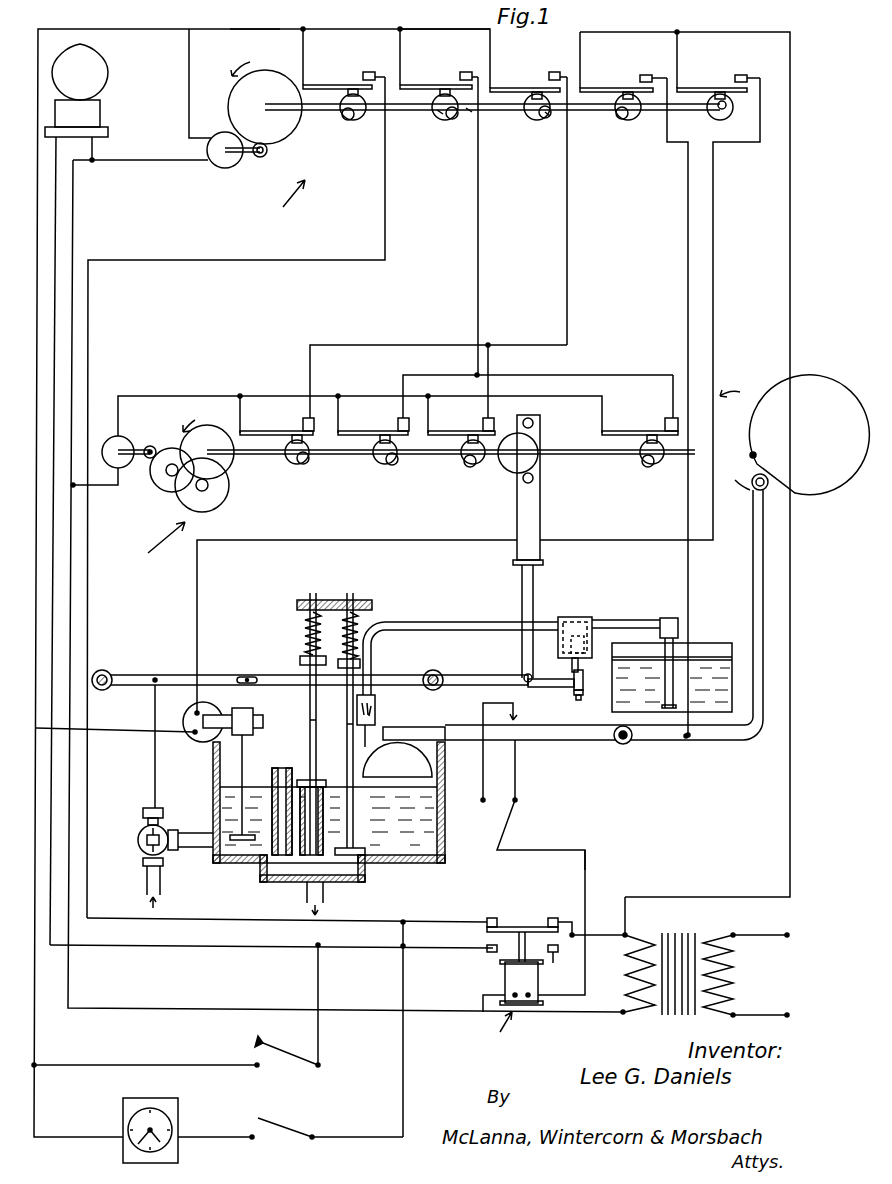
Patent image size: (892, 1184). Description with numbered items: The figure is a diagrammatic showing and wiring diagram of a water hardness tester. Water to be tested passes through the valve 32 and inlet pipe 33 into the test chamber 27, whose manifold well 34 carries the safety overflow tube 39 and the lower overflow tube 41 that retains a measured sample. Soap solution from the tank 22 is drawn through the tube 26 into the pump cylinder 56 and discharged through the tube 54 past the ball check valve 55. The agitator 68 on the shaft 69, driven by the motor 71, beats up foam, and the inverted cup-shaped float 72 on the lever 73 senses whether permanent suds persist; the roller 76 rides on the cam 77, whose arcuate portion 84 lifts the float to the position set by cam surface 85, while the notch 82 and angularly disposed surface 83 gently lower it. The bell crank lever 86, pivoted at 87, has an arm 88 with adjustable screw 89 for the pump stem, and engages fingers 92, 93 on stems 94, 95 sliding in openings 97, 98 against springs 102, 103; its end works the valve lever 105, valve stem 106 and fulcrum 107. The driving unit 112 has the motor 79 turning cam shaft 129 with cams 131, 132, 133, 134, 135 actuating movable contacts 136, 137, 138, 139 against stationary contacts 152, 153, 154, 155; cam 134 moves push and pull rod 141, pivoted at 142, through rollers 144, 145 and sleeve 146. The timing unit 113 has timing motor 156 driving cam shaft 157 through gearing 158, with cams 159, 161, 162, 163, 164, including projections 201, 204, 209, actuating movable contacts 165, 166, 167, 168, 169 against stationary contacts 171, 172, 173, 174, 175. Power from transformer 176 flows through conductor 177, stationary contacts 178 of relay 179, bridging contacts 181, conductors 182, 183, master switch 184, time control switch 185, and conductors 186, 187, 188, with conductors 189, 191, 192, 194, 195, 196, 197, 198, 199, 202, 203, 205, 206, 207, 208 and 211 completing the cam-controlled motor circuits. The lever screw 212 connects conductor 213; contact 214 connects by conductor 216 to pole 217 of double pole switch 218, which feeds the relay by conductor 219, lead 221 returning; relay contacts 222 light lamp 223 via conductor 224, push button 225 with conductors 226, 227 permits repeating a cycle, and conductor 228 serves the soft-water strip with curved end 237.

The tank 22 is at (713, 746).
The tube 26 is at (674, 650).
The test chamber 27 is at (329, 802).
The valve 32 is at (140, 838).
The inlet pipe 33 is at (155, 880).
The manifold well 34 is at (343, 875).
The safety overflow tube 39 is at (285, 767).
The overflow tube 41 is at (295, 862).
The tube 54 is at (390, 620).
The ball check valve 55 is at (377, 712).
The pump cylinder 56 is at (585, 615).
The agitator 68 is at (240, 842).
The shaft 69 is at (244, 752).
The electric motor 71 is at (212, 707).
The inverted cup-shaped float 72 is at (397, 760).
The lever 73 is at (737, 742).
The roller 76 is at (764, 490).
The cam 77 is at (802, 435).
The motor 79 is at (104, 432).
The notch 82 is at (758, 460).
The angularly disposed surface 83 is at (778, 486).
The arcuate portion 84 is at (737, 478).
The cam surface 85 is at (755, 396).
The lever 86 is at (270, 673).
The pivotal support 87 is at (442, 673).
The arm 88 is at (544, 678).
The adjustable screw 89 is at (577, 700).
The adjustable finger 92 is at (295, 655).
The adjustable finger 93 is at (342, 660).
The stem 94 is at (308, 720).
The stem 95 is at (346, 724).
The opening 97 is at (308, 592).
The opening 98 is at (356, 592).
The spring 102 is at (300, 625).
The spring 103 is at (340, 599).
The valve lever 105 is at (208, 675).
The valve stem 106 is at (153, 715).
The fulcrum 107 is at (104, 670).
The driving unit 112 is at (172, 497).
The timing unit 113 is at (270, 205).
The cam shaft 129 is at (342, 458).
The cam 131 is at (290, 464).
The cam 132 is at (392, 466).
The cam 133 is at (470, 466).
The cam 134 is at (512, 468).
The cam 135 is at (658, 465).
The movable contact 136 is at (300, 429).
The movable contact 137 is at (396, 429).
The movable contact 138 is at (481, 429).
The movable contact 139 is at (664, 429).
The push and pull rod 141 is at (535, 590).
The pivotal attachment 142 is at (522, 672).
The roller 144 is at (535, 421).
The roller 145 is at (534, 482).
The sleeve 146 is at (542, 518).
The stationary contact 152 is at (312, 416).
The stationary contact 153 is at (408, 418).
The stationary contact 154 is at (494, 419).
The stationary contact 155 is at (665, 418).
The timing motor 156 is at (235, 163).
The cam shaft 157 is at (405, 118).
The gearing 158 is at (268, 155).
The cam 159 is at (350, 120).
The cam 161 is at (447, 120).
The cam 162 is at (531, 118).
The cam 163 is at (622, 120).
The cam 164 is at (713, 118).
The movable contact 165 is at (352, 70).
The movable contact 166 is at (445, 75).
The movable contact 167 is at (525, 86).
The movable contact 168 is at (620, 86).
The movable contact 169 is at (715, 86).
The stationary contact 171 is at (368, 72).
The stationary contact 172 is at (466, 72).
The stationary contact 173 is at (555, 72).
The stationary contact 174 is at (647, 75).
The stationary contact 175 is at (744, 75).
The transformer 176 is at (678, 1010).
The conductor 177 is at (598, 932).
The stationary contacts 178 is at (556, 915).
The relay 179 is at (493, 1032).
The bridging contacts 181 is at (515, 926).
The conductor 182 is at (424, 918).
The conductor 183 is at (405, 1057).
The master switch 184 is at (286, 1125).
The time control switch 185 is at (187, 1109).
The conductor 186 is at (36, 1100).
The conductor 187 is at (189, 78).
The conductor 188 is at (73, 220).
The conductor 189 is at (190, 265).
The conductor 191 is at (304, 45).
The conductor 192 is at (255, 29).
The conductor 194 is at (383, 29).
The conductor 195 is at (462, 29).
The conductor 196 is at (570, 255).
The conductor 197 is at (368, 345).
The conductor 198 is at (177, 396).
The conductor 199 is at (105, 492).
The projection 201 is at (470, 110).
The conductor 202 is at (480, 250).
The conductor 203 is at (418, 376).
The projection 204 is at (548, 117).
The conductor 205 is at (490, 365).
The conductor 206 is at (114, 735).
The conductor 207 is at (715, 298).
The conductor 208 is at (791, 124).
The projection 209 is at (440, 117).
The conductor 211 is at (617, 375).
The screw 212 is at (683, 737).
The conductor 213 is at (689, 573).
The contact 214 is at (522, 747).
The conductor 216 is at (517, 773).
The pole 217 is at (517, 800).
The double pole switch 218 is at (512, 832).
The conductor 219 is at (587, 866).
The lead 221 is at (483, 999).
The relay contacts 222 is at (553, 965).
The lamp 223 is at (76, 494).
The conductor 224 is at (152, 949).
The push button 225 is at (266, 1040).
The conductor 226 is at (319, 1000).
The conductor 227 is at (125, 1065).
The conductor 228 is at (482, 780).
The curved end 237 is at (520, 714).